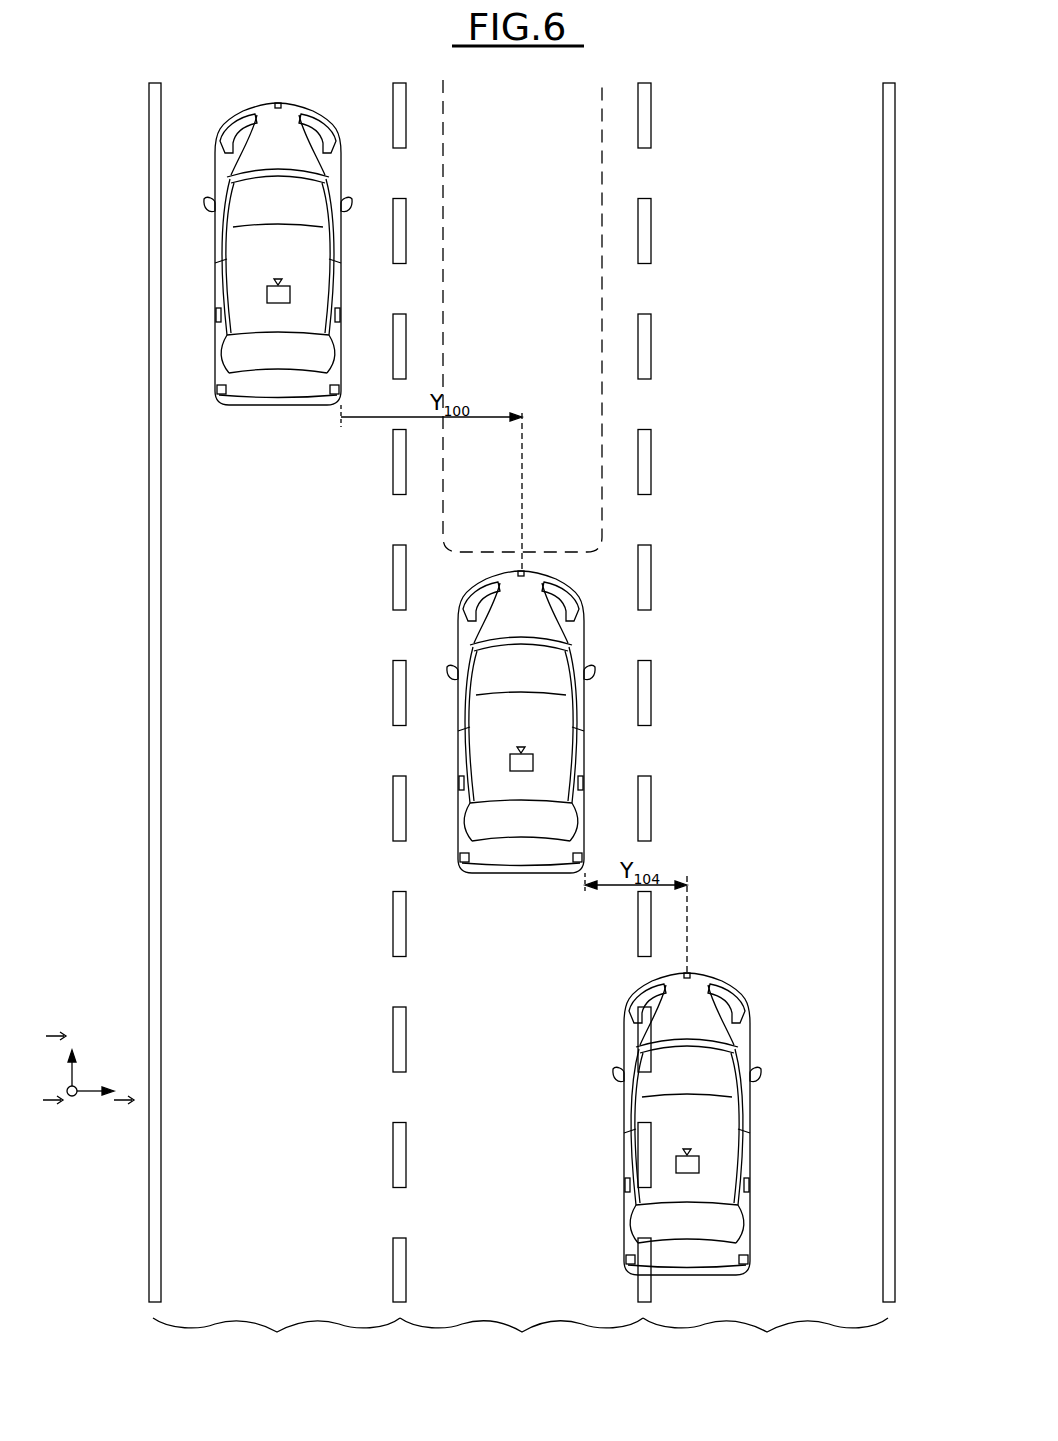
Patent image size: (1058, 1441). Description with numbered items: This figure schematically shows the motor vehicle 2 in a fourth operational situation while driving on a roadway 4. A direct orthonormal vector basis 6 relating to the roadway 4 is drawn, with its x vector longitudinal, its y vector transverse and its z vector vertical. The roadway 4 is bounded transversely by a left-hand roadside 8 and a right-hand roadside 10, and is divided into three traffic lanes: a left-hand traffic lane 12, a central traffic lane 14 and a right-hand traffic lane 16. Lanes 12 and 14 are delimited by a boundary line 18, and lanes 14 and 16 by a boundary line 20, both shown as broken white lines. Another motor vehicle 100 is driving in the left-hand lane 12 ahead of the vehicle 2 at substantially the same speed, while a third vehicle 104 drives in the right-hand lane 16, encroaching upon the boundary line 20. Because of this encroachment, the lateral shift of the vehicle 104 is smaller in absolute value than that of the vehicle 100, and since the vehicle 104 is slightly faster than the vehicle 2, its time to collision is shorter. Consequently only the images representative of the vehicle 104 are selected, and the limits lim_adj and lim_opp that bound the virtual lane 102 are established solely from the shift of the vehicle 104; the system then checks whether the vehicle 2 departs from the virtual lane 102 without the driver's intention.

The motor vehicle 2 is at (589, 762).
The roadway 4 is at (529, 723).
The direct orthonormal vector basis 6 is at (76, 1134).
The left-hand roadside 8 is at (149, 1252).
The right-hand roadside 10 is at (895, 1252).
The left-hand traffic lane 12 is at (276, 1340).
The central traffic lane 14 is at (521, 1340).
The right-hand traffic lane 16 is at (765, 1340).
The boundary line 18 is at (393, 1270).
The boundary line 20 is at (639, 1292).
The motor vehicle 100 is at (213, 287).
The virtual lane 102 is at (603, 296).
The third vehicle 104 is at (753, 1162).